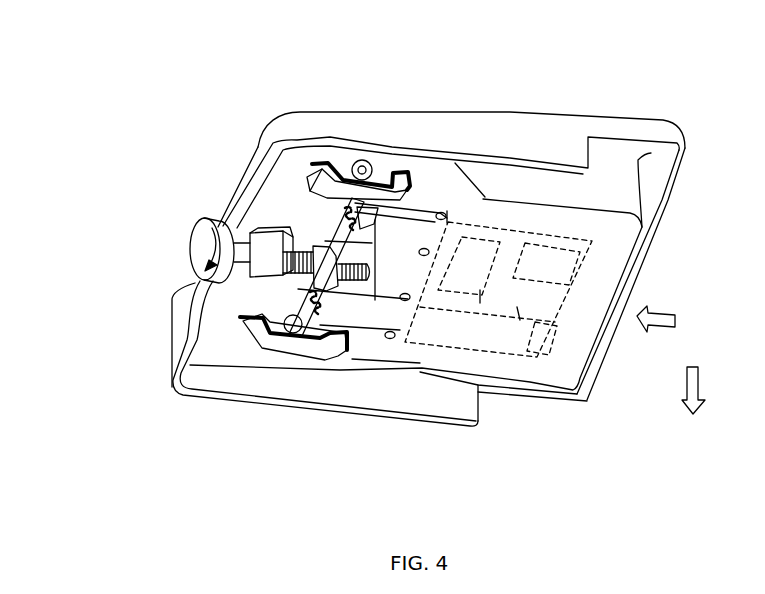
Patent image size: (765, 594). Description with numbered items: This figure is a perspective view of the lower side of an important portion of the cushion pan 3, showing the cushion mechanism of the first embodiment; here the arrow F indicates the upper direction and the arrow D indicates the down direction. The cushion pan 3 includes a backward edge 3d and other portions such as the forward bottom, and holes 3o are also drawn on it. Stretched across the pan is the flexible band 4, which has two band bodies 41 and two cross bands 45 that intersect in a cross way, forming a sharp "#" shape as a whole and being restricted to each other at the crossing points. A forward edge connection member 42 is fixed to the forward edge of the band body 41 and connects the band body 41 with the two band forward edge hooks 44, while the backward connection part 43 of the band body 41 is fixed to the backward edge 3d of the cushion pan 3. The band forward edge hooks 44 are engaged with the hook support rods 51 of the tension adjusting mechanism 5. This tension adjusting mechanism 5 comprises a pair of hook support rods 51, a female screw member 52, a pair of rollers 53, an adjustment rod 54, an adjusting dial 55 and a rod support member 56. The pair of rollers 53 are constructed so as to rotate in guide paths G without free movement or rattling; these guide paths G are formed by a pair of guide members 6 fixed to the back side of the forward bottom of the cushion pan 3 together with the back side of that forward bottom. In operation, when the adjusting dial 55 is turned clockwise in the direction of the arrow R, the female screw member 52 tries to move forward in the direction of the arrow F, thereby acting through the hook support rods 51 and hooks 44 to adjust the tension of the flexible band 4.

The cushion pan 3 is at (563, 108).
The holes 3o is at (408, 213).
The backward edge 3d is at (609, 252).
The flexible band 4 is at (570, 483).
The band body 41 is at (480, 192).
The forward edge connection member 42 is at (408, 205).
The backward connection part 43 is at (587, 265).
The band forward edge hook 44 is at (320, 282).
The cross band 45 is at (517, 307).
The tension adjusting mechanism 5 is at (280, 64).
The hook support rod 51 is at (320, 247).
The female screw member 52 is at (316, 250).
The roller 53 is at (357, 166).
The adjustment rod 54 is at (258, 232).
The adjusting dial 55 is at (193, 240).
The rod support member 56 is at (272, 240).
The guide member 6 is at (421, 213).
The guide path G is at (382, 174).
The arrow R is at (212, 246).
The arrow F is at (656, 333).
The arrow D is at (705, 390).